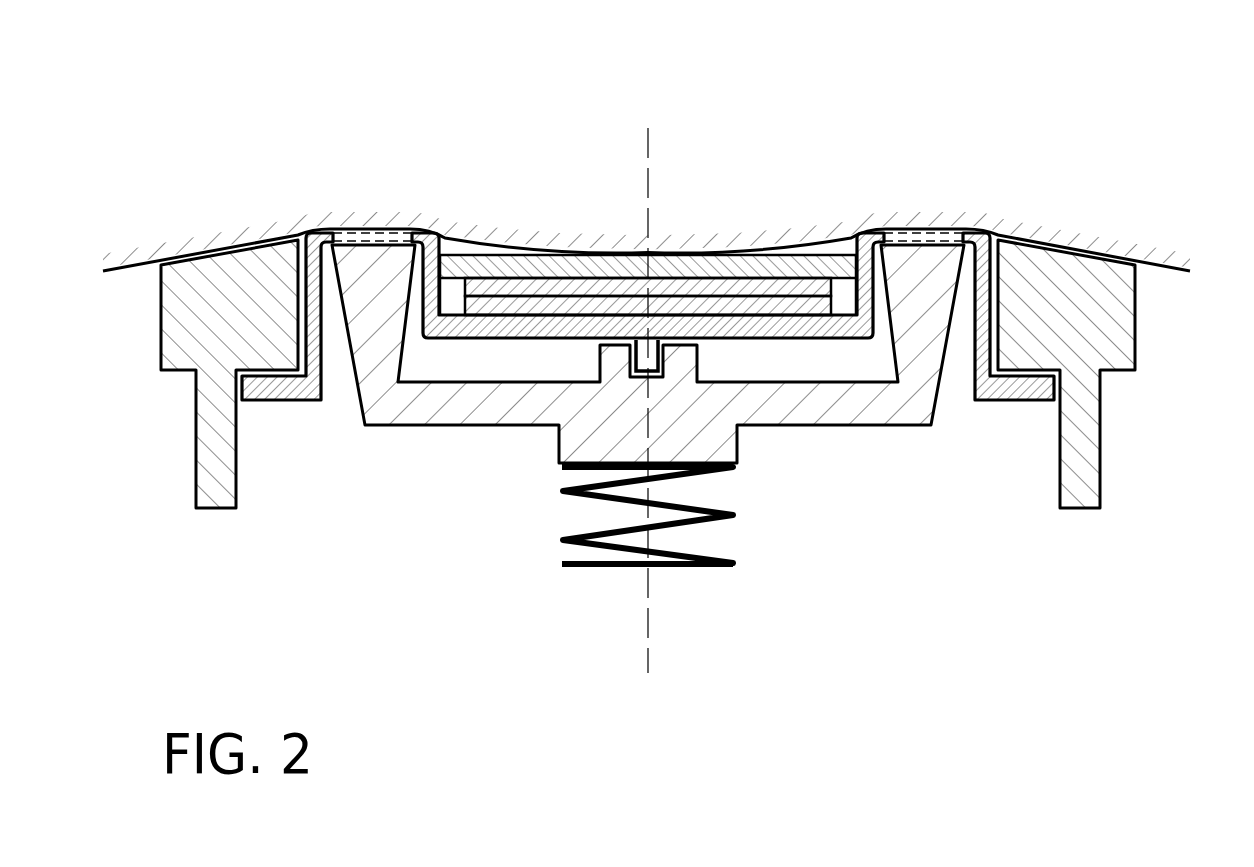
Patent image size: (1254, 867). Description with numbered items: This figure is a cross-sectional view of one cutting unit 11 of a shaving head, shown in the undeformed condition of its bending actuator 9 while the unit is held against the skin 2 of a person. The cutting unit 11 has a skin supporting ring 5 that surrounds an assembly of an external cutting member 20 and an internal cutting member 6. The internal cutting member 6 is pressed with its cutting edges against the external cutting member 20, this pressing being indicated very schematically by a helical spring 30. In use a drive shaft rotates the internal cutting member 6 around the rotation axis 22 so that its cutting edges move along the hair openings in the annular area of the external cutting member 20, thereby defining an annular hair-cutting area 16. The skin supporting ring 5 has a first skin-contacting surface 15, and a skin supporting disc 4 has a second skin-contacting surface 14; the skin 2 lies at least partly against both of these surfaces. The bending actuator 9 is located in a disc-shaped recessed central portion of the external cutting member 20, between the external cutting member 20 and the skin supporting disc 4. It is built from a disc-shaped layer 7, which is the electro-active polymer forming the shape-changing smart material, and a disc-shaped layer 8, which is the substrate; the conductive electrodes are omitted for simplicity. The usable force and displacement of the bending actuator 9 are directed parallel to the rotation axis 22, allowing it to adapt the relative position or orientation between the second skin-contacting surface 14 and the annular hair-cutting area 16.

The skin 2 is at (581, 74).
The skin supporting disc 4 is at (591, 265).
The skin supporting ring 5 is at (190, 320).
The internal cutting member 6 is at (378, 360).
The disc-shaped layer 7 is at (538, 287).
The disc-shaped layer 8 is at (497, 302).
The bending actuator 9 is at (558, 155).
The cutting unit 11 is at (1186, 105).
The second skin-contacting surface 14 is at (778, 250).
The first skin-contacting surface 15 is at (211, 252).
The annular hair-cutting area 16 is at (372, 224).
The external cutting member 20 is at (275, 388).
The rotation axis 22 is at (648, 102).
The helical spring 30 is at (590, 568).